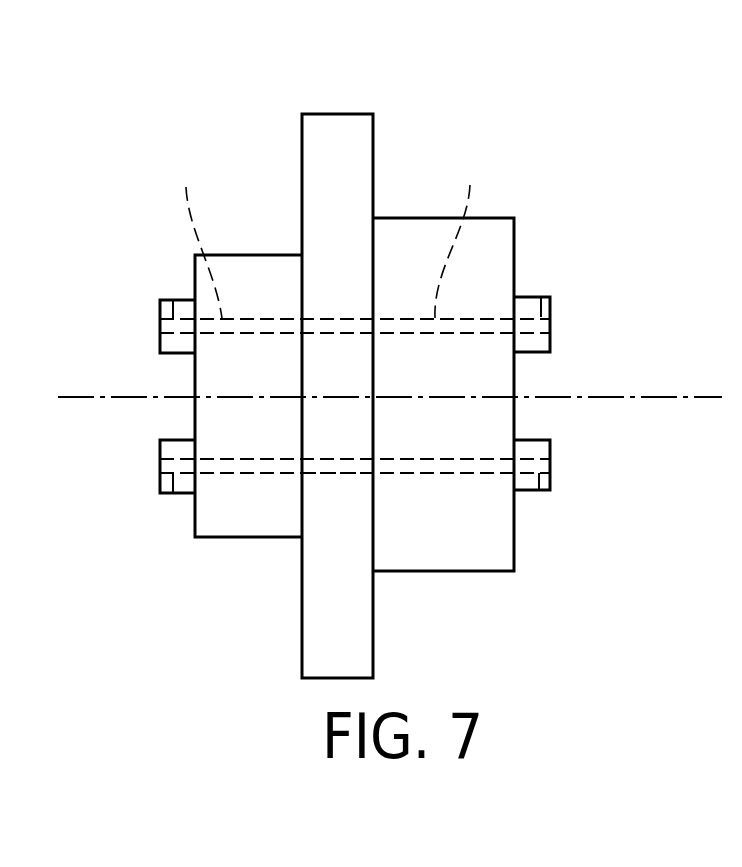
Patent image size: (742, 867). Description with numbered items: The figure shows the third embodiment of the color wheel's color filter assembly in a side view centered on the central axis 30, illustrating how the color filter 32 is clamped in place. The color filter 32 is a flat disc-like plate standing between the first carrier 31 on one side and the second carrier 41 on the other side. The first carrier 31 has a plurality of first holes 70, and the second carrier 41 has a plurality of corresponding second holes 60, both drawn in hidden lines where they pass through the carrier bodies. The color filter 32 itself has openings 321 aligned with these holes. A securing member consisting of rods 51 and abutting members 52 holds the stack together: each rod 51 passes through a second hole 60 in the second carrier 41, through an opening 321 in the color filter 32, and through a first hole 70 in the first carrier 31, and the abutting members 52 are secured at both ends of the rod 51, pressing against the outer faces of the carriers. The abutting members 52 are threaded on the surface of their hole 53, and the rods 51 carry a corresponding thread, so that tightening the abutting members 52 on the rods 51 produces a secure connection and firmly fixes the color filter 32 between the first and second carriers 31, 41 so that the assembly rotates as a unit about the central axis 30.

The central axis 30 is at (633, 395).
The first carrier 31 is at (408, 218).
The color filter 32 is at (337, 113).
The opening 321 is at (330, 473).
The second carrier 41 is at (277, 255).
The rod 51 is at (250, 468).
The abutting member 52 is at (160, 312).
The hole 53 is at (173, 315).
The second hole 60 is at (197, 231).
The first hole 70 is at (461, 231).